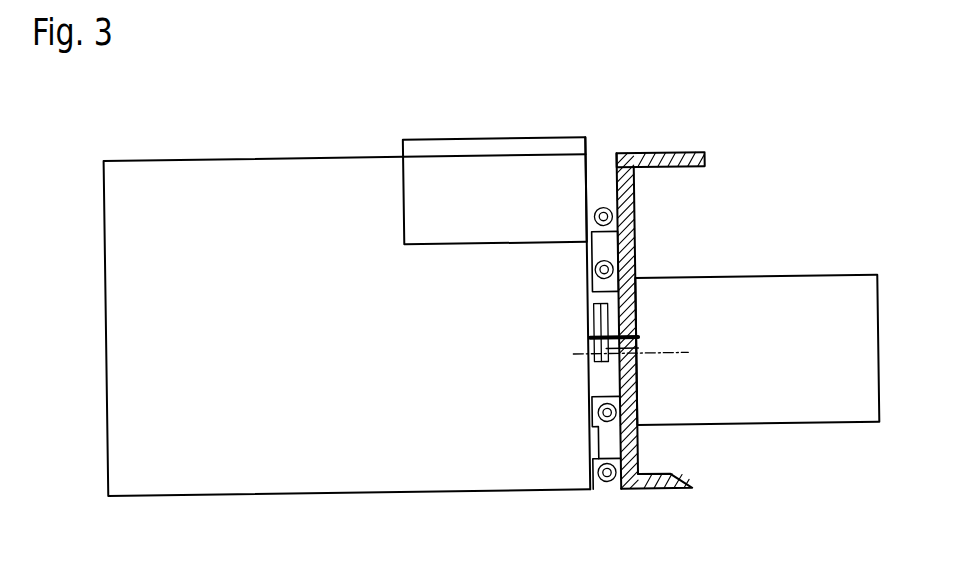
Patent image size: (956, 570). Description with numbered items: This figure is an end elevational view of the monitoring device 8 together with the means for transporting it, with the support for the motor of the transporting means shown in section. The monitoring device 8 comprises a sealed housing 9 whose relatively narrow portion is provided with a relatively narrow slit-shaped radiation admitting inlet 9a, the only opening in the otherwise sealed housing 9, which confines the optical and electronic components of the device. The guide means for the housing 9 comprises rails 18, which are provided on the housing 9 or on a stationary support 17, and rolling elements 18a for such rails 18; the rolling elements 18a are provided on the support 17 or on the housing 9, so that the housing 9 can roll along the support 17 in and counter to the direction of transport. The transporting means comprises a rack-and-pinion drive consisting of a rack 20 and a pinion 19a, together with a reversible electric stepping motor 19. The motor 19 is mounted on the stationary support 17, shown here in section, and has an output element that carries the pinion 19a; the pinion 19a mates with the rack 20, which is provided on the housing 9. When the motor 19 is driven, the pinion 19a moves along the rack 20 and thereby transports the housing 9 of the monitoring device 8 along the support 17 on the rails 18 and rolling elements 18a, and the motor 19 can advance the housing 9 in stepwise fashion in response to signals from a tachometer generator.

The monitoring device 8 is at (289, 546).
The housing 9 is at (436, 471).
The radiation admitting inlet 9a is at (508, 141).
The stationary support 17 is at (638, 192).
The rails 18 is at (630, 240).
The rolling elements 18a is at (606, 207).
The reversible electric stepping motor 19 is at (760, 299).
The pinion 19a is at (592, 339).
The rack 20 is at (594, 310).